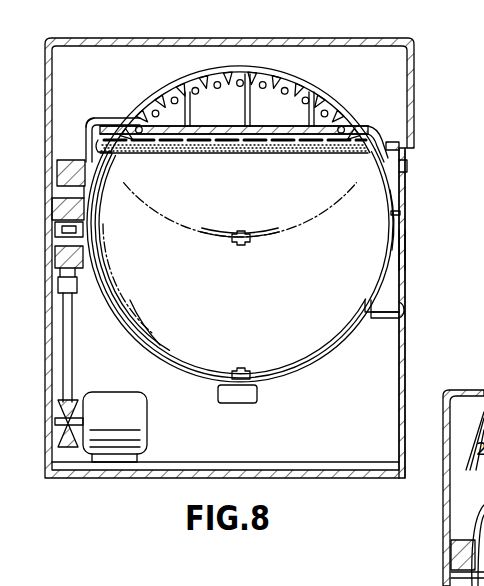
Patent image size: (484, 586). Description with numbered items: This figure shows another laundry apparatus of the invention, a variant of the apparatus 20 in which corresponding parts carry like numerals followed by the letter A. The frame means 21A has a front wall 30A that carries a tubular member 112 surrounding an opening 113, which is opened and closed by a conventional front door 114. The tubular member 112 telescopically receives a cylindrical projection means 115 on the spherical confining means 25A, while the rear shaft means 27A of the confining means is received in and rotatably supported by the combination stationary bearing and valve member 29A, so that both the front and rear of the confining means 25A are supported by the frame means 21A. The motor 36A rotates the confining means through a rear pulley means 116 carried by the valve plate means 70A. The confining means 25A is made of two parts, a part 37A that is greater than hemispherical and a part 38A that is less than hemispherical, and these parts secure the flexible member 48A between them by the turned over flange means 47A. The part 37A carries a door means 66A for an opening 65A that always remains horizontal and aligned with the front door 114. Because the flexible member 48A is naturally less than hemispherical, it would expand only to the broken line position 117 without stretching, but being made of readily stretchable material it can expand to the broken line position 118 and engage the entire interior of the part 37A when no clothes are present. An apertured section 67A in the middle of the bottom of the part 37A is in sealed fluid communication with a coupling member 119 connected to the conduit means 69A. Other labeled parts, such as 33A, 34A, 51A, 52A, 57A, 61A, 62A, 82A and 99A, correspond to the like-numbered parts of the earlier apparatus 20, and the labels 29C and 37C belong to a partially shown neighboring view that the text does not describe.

The laundry apparatus 20 is at (430, 62).
The frame means 21A is at (405, 333).
The confining means 25A is at (239, 308).
The rear shaft means 27A is at (76, 240).
The combination stationary bearing and valve member 29A is at (86, 140).
The front wall 30A is at (408, 361).
The belt 33A is at (68, 363).
The pulley 34A is at (58, 430).
The motor 36A is at (147, 430).
The confining part 37A is at (297, 375).
The confining part 38A is at (367, 108).
The turned over flange means 47A is at (98, 152).
The flexible member 48A is at (320, 153).
The top panel 51A is at (268, 152).
The baffle 52A is at (300, 84).
The perforated drum wall 57A is at (185, 76).
The seal 61A is at (110, 148).
The drum wall 62A is at (152, 317).
The opening 65A is at (378, 268).
The door means 66A is at (394, 215).
The apertured section 67A is at (246, 368).
The conduit means 69A is at (153, 365).
The valve plate means 70A is at (86, 208).
The support 82A is at (110, 118).
The gasket 99A is at (238, 148).
The tubular member 112 is at (386, 318).
The opening 113 is at (410, 172).
The front door 114 is at (410, 248).
The cylindrical projection means 115 is at (399, 142).
The rear pulley means 116 is at (66, 280).
The broken line position 117 is at (277, 238).
The broken line position 118 is at (262, 372).
The coupling member 119 is at (240, 397).
The bearing 29C is at (449, 544).
The drum shell 37C is at (469, 450).